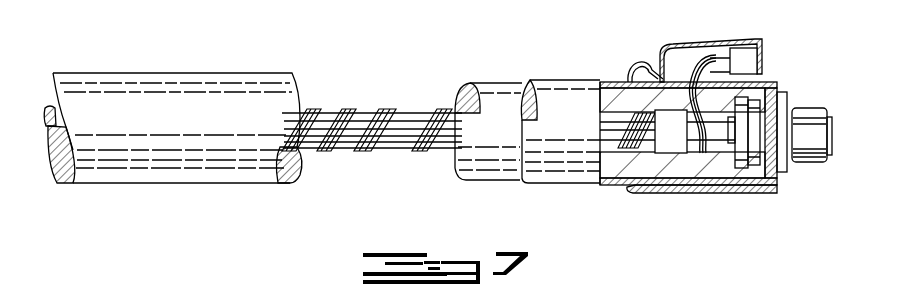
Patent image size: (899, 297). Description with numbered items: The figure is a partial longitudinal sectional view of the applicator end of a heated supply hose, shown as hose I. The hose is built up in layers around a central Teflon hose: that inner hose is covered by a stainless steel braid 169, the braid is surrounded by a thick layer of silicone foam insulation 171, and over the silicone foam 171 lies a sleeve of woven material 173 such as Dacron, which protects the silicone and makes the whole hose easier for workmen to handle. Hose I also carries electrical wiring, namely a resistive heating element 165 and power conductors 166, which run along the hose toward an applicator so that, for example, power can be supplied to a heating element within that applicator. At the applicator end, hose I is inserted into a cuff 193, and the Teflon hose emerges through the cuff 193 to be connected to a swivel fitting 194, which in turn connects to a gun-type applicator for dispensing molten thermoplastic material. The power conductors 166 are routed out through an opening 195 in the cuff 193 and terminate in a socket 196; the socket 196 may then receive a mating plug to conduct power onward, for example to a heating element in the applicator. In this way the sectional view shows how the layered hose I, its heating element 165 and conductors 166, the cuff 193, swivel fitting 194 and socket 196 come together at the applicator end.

The stainless steel braid 169 is at (355, 122).
The power conductors 166 is at (342, 146).
The resistive heating element 165 is at (370, 146).
The silicone foam insulation 171 is at (490, 168).
The sleeve of woven material 173 is at (568, 165).
The hose I is at (578, 185).
The cuff 193 is at (648, 37).
The opening 195 is at (717, 55).
The socket 196 is at (745, 63).
The swivel fitting 194 is at (808, 110).